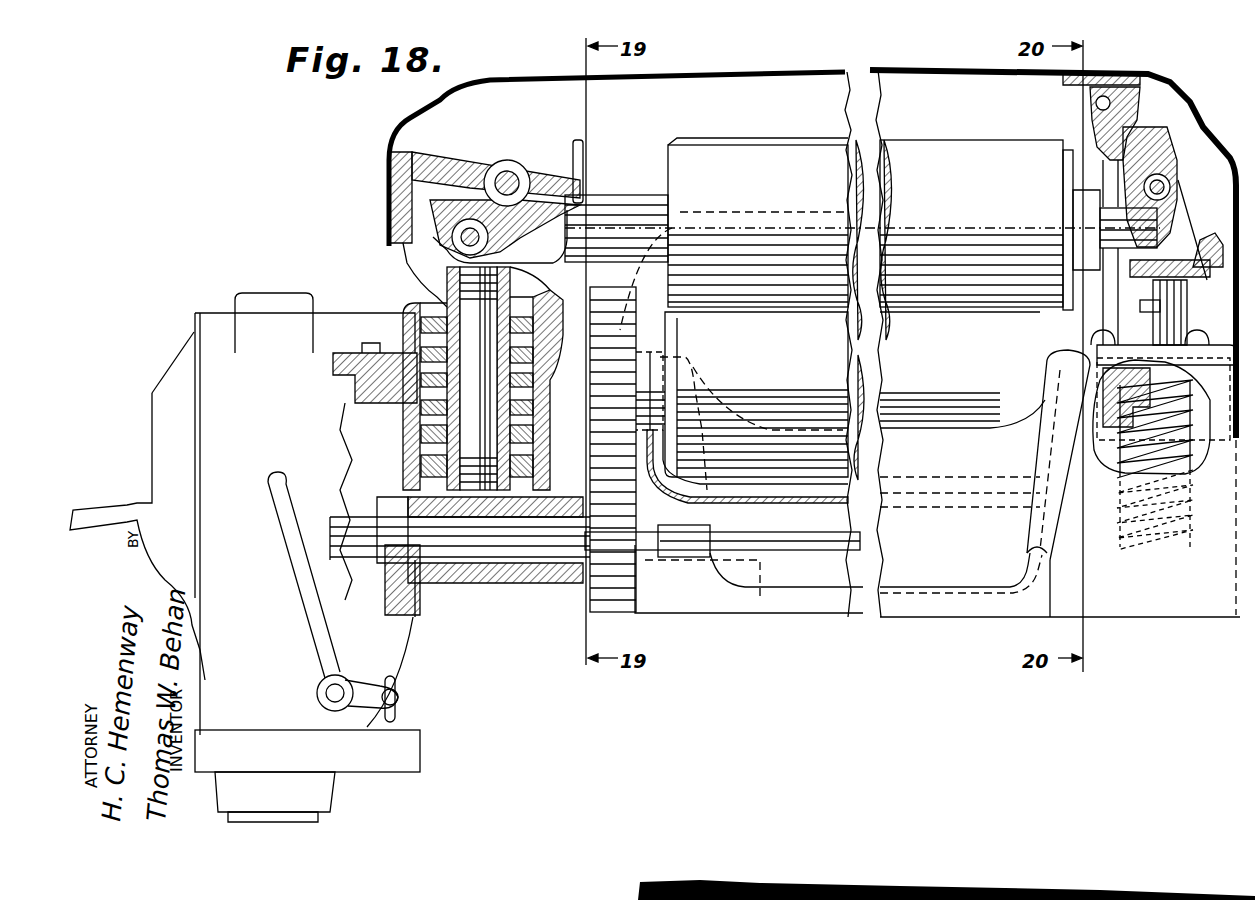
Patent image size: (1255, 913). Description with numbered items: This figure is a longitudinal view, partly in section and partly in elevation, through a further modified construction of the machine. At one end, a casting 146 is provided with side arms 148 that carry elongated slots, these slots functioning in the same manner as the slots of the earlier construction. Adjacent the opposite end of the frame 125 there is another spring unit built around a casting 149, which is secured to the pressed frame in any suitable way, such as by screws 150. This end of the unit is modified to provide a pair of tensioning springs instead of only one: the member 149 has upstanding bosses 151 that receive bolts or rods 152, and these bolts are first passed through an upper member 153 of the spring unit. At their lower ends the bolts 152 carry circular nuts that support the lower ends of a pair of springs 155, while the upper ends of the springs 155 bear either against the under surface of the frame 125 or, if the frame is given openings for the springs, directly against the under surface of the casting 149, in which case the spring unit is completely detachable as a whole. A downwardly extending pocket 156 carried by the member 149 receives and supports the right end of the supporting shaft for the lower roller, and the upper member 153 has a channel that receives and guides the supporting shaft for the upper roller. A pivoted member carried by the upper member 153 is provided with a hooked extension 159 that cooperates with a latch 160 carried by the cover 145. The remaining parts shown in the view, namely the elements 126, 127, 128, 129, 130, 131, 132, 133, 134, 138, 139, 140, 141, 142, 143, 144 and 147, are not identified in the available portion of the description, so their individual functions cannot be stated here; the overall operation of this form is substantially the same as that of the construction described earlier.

The frame 125 is at (980, 603).
The flange 126 is at (348, 355).
The bearing member 127 is at (420, 597).
The bracket 128 is at (212, 403).
The casing 129 is at (420, 297).
The cap 130 is at (535, 278).
The cover member 131 is at (415, 232).
The spring discs 132 is at (513, 330).
The bottom plate 133 is at (510, 487).
The shaft bearing 134 is at (442, 487).
The gear 138 is at (553, 443).
The wall 139 is at (582, 488).
The shaft 140 is at (582, 508).
The pin 141 is at (452, 237).
The block 142 is at (513, 177).
The shaft 143 is at (582, 197).
The plate 144 is at (578, 160).
The cover 145 is at (430, 103).
The casting 146 is at (413, 157).
The plate 147 is at (453, 167).
The side arms 148 is at (483, 167).
The casting 149 is at (1182, 350).
The screws 150 is at (1198, 345).
The upstanding bosses 151 is at (1133, 290).
The bolts or rods 152 is at (1160, 307).
The upper member 153 is at (1110, 172).
The springs 155 is at (1178, 468).
The pocket 156 is at (1175, 378).
The hooked extension 159 is at (1123, 133).
The latch 160 is at (1093, 130).